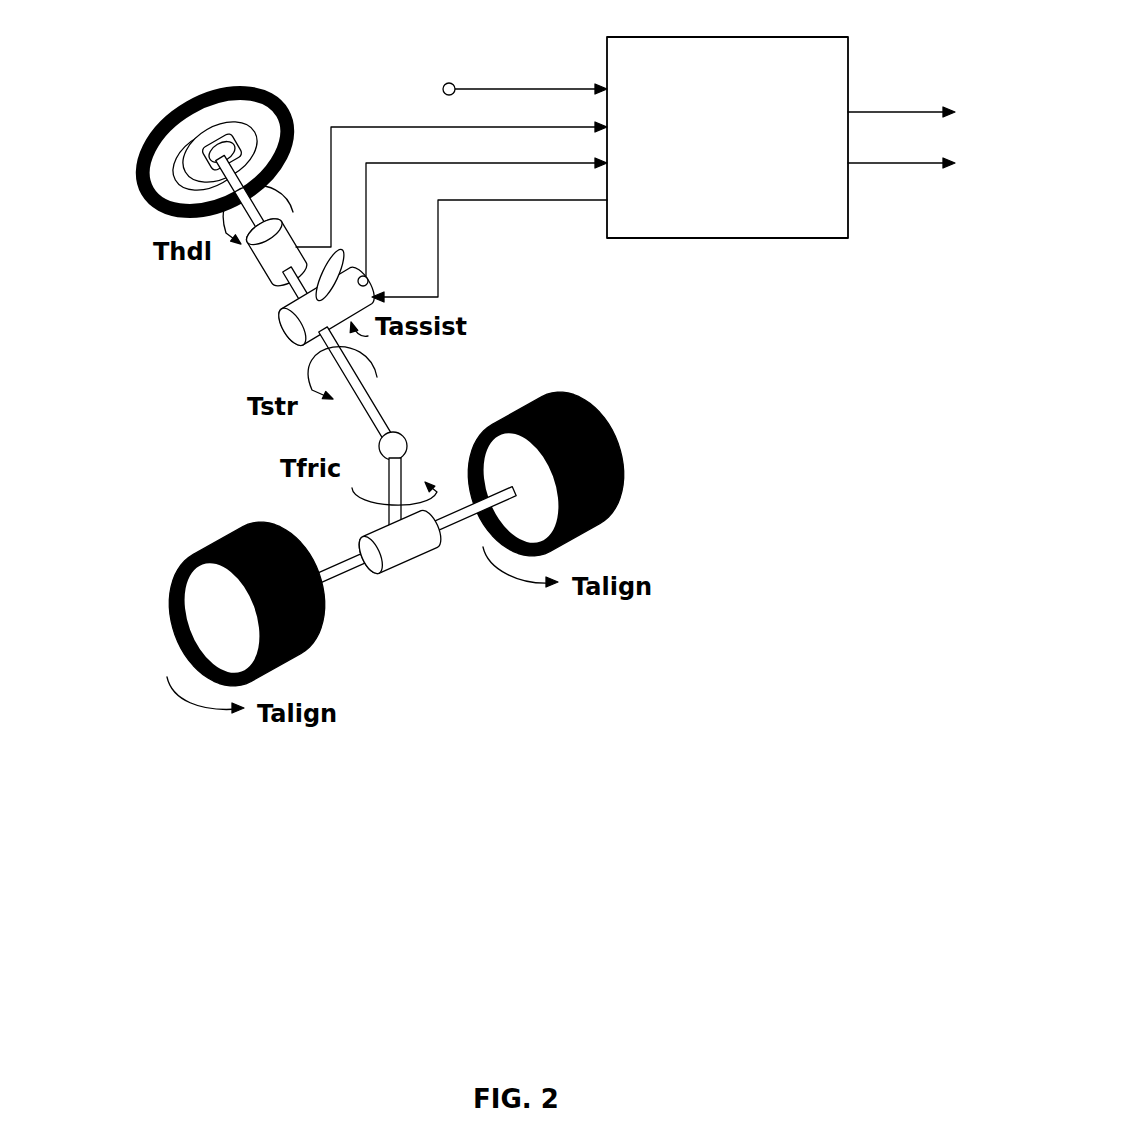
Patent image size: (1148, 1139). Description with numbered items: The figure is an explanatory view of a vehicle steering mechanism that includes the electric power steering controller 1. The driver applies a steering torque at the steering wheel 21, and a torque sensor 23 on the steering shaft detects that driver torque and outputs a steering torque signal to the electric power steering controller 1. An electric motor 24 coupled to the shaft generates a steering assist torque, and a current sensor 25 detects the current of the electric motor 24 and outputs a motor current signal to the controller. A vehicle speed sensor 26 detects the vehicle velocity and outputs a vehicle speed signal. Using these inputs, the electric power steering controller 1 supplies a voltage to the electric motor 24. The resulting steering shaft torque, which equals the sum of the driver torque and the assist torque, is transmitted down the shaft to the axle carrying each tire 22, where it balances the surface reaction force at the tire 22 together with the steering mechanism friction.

The electric power steering controller 1 is at (810, 240).
The steering wheel 21 is at (150, 207).
The tire 22 is at (599, 426).
The torque sensor 23 is at (253, 270).
The electric motor 24 is at (290, 313).
The current sensor 25 is at (362, 276).
The vehicle speed sensor 26 is at (451, 83).